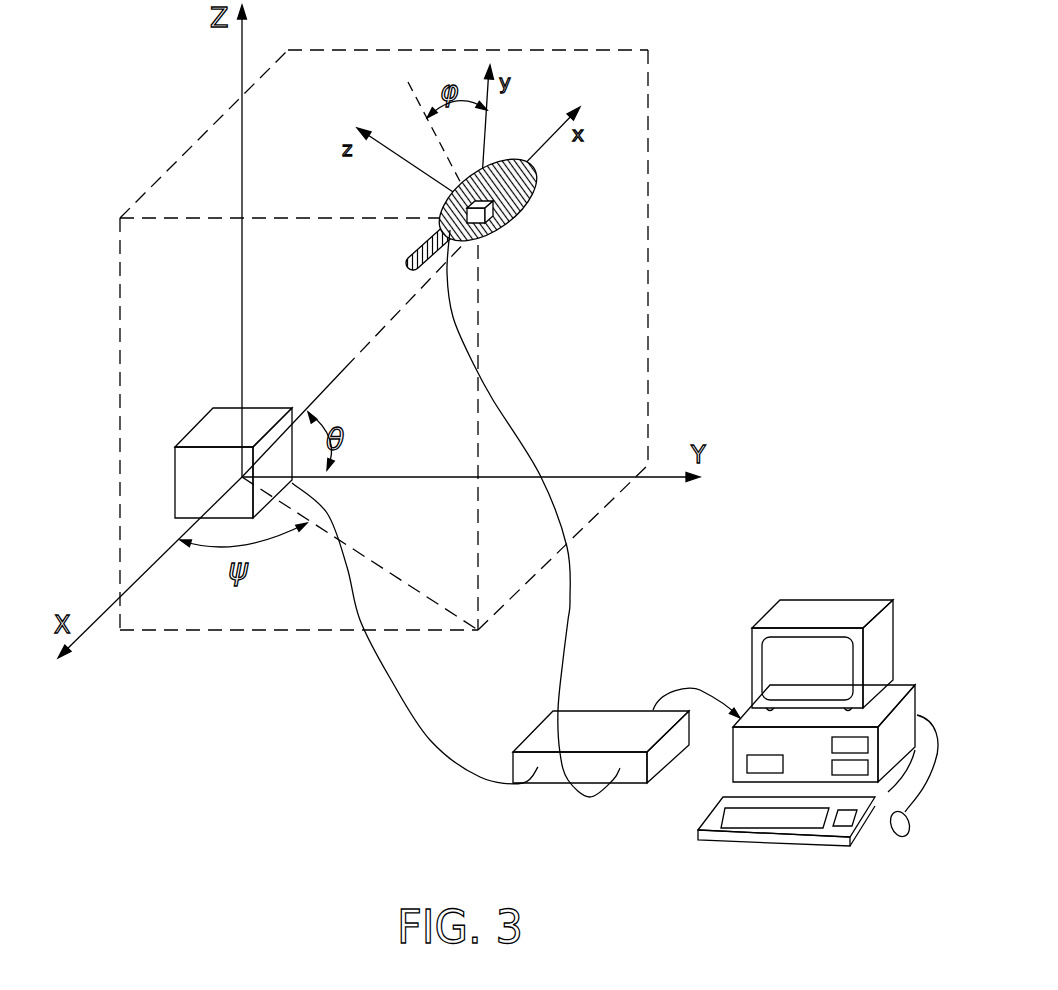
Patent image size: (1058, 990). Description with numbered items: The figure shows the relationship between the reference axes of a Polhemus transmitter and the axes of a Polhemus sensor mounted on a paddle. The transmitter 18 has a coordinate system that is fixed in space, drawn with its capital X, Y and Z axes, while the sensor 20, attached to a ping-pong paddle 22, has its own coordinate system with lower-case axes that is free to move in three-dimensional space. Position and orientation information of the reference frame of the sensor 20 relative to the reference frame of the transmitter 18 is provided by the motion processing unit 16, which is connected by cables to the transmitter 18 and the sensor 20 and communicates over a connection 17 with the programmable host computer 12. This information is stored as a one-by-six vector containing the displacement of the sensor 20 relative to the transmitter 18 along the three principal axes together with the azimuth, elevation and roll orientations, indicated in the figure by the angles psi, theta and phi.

The programmable host computer 12 is at (905, 690).
The motion processing unit 16 is at (617, 711).
The cable 17 is at (694, 689).
The transmitter 18 is at (175, 470).
The sensor 20 is at (497, 230).
The ping-pong paddle 22 is at (517, 213).